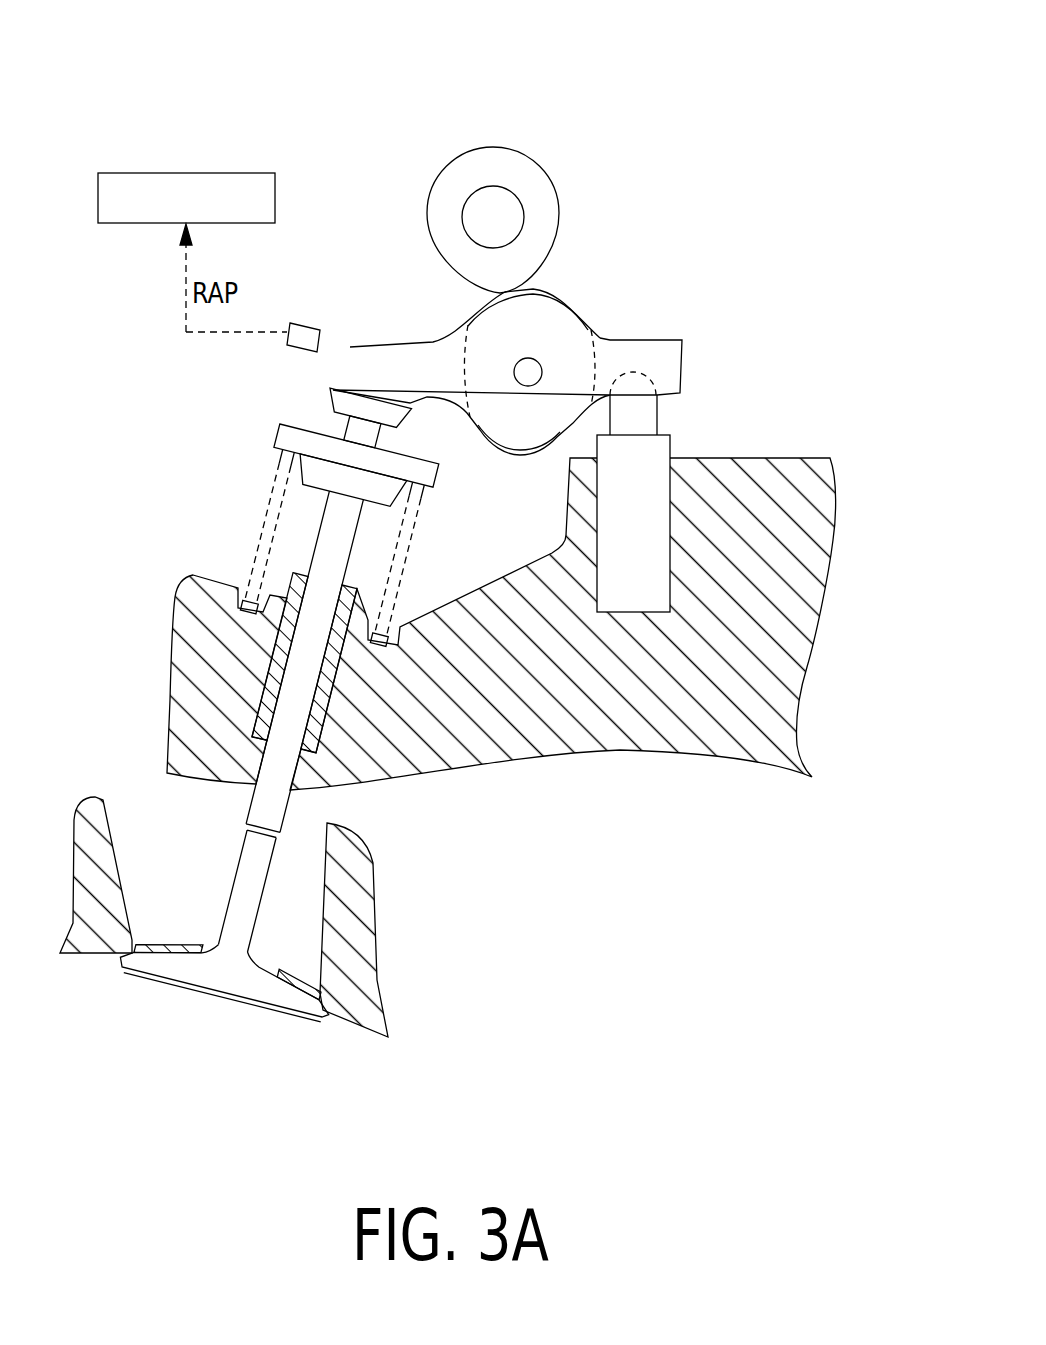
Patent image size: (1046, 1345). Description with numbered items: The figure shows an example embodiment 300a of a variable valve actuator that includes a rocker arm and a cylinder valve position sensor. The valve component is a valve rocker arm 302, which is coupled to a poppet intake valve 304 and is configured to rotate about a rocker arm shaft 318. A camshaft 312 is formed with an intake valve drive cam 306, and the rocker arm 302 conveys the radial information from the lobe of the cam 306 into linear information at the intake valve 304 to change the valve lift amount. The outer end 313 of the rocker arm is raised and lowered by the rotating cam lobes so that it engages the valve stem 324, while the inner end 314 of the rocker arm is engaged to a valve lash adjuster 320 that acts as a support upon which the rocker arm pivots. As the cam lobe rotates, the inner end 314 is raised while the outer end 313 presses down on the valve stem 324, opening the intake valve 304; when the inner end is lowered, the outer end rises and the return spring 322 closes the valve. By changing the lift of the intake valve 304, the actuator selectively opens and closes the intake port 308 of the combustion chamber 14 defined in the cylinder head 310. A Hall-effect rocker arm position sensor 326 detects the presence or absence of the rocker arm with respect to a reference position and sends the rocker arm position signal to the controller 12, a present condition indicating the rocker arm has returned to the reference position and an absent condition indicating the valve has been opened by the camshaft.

The controller 12 is at (188, 174).
The combustion chamber 14 is at (188, 1039).
The variable valve actuator embodiment 300a is at (690, 45).
The valve rocker arm 302 is at (600, 291).
The intake valve 304 is at (292, 997).
The intake valve drive cam 306 is at (538, 165).
The intake port 308 is at (155, 938).
The cylinder head 310 is at (835, 527).
The camshaft 312 is at (512, 219).
The outer end of the rocker arm 313 is at (337, 390).
The inner end of the rocker arm 314 is at (648, 338).
The rocker arm shaft 318 is at (520, 368).
The valve lash adjuster 320 is at (663, 446).
The return spring 322 is at (270, 508).
The valve stem 324 is at (280, 827).
The rocker arm position sensor 326 is at (309, 323).